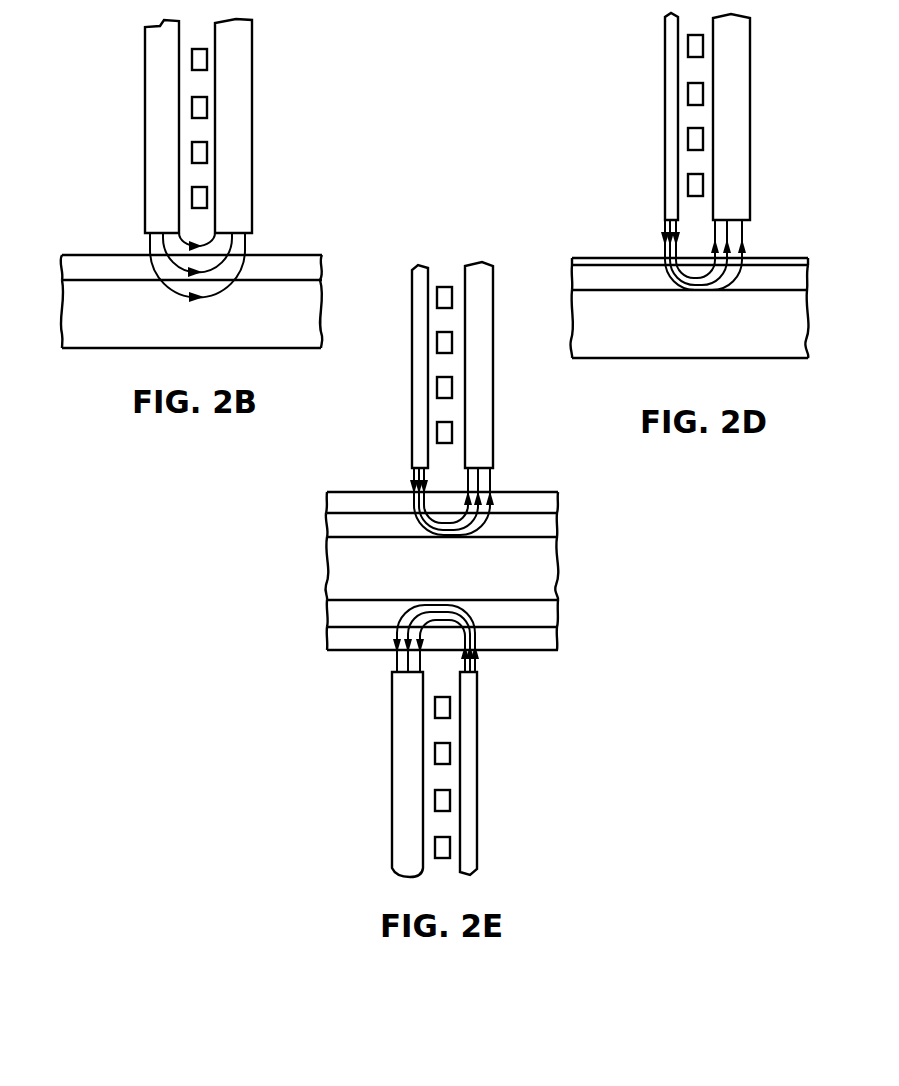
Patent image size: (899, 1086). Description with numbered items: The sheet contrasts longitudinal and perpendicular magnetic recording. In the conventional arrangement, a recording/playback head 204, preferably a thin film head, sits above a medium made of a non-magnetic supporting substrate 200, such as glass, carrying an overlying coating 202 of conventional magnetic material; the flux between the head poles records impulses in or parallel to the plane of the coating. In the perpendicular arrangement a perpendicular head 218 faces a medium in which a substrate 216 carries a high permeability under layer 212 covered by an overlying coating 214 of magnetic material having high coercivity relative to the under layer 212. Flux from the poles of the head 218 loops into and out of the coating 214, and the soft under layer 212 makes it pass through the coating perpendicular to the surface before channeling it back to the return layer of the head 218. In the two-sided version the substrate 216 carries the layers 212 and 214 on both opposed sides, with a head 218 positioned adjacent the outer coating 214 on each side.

In FIG. 2B, the supporting substrate 200 is at (77, 338).
In FIG. 2B, the overlying coating 202 is at (107, 263).
In FIG. 2B, the recording/playback head 204 is at (140, 116).
In FIG. 2D, the under layer 212 is at (580, 278).
In FIG. 2E, the under layer 212 is at (547, 528).
In FIG. 2D, the overlying coating 214 is at (598, 258).
In FIG. 2E, the overlying coating 214 is at (550, 505).
In FIG. 2D, the substrate 216 is at (661, 349).
In FIG. 2E, the substrate 216 is at (555, 575).
In FIG. 2D, the perpendicular head 218 is at (750, 145).
In FIG. 2E, the perpendicular head 218 is at (506, 395).